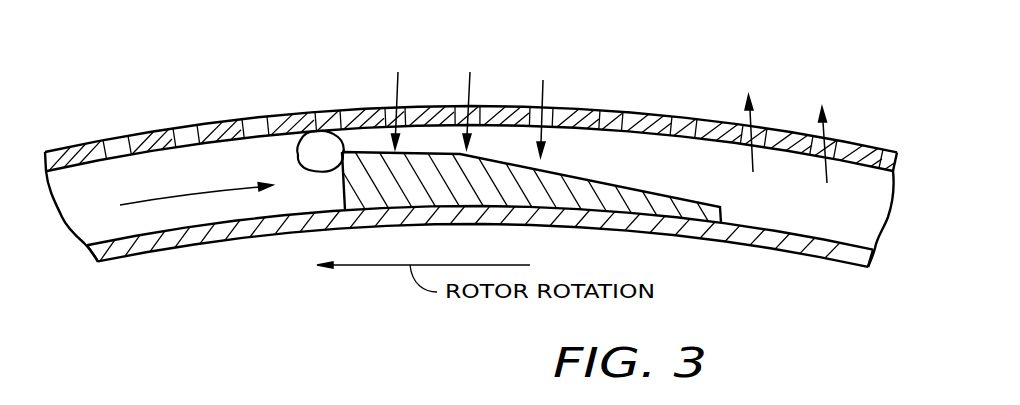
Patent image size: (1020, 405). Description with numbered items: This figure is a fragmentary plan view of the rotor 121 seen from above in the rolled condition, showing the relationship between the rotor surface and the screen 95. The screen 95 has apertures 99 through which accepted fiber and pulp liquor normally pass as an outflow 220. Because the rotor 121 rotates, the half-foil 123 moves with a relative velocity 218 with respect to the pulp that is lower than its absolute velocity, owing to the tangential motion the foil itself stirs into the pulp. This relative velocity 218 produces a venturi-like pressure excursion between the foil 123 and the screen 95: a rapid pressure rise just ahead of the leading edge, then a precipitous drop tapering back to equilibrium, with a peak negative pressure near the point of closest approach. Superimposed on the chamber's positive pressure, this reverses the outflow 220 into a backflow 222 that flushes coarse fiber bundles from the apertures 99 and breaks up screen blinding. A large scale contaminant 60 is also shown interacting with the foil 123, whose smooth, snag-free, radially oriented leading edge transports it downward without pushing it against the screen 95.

The screen 95 is at (148, 139).
The apertures 99 is at (683, 130).
The large scale contaminant 60 is at (315, 148).
The backflow 222 is at (543, 93).
The normal outflow 220 is at (753, 117).
The relative velocity 218 is at (203, 187).
The rotor 121 is at (225, 230).
The half-foil 123 is at (548, 197).